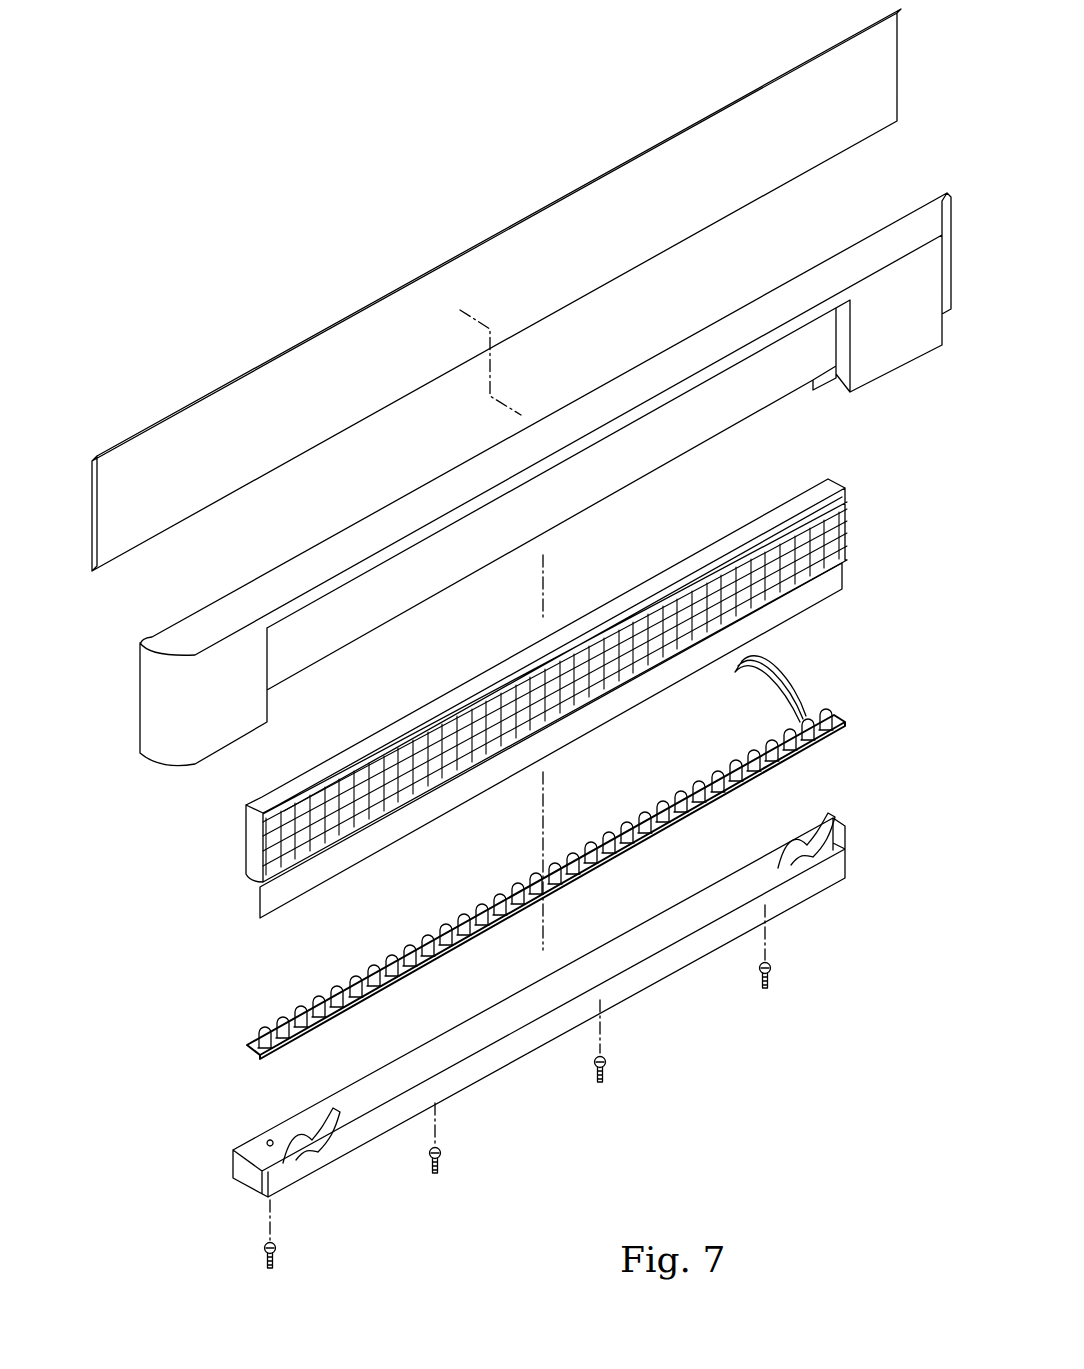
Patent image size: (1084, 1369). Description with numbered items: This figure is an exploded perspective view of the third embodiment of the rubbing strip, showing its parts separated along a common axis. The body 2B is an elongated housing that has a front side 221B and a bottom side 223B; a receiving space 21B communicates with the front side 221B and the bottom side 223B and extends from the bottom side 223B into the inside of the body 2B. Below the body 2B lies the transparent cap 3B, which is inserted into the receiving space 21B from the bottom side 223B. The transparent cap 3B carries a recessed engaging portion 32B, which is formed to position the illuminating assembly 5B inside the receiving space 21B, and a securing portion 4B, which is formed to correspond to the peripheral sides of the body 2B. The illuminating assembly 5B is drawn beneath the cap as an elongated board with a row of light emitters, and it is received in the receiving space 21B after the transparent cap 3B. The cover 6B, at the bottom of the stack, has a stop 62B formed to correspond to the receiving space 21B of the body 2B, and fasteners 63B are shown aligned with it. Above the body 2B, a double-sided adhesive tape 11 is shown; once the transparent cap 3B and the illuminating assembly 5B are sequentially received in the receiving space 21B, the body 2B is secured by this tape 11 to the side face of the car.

The double-sided adhesive tape 11 is at (632, 148).
The body 2B is at (915, 185).
The receiving space 21B is at (725, 410).
The front side 221B is at (903, 333).
The bottom side 223B is at (376, 632).
The transparent cap 3B is at (543, 718).
The securing portion 4B is at (247, 808).
The recessed engaging portion 32B is at (256, 905).
The illuminating assembly 5B is at (853, 750).
The cover 6B is at (511, 1016).
The stop 62B is at (255, 1158).
The screw 63B is at (770, 988).